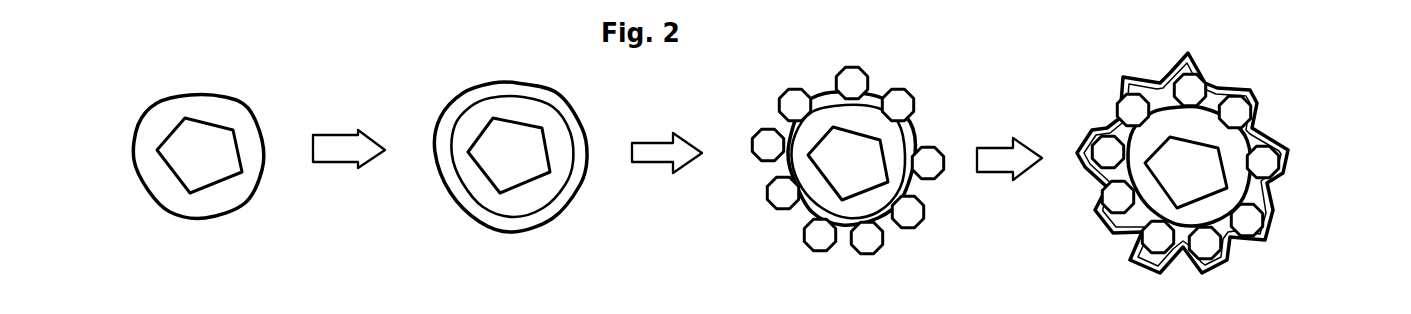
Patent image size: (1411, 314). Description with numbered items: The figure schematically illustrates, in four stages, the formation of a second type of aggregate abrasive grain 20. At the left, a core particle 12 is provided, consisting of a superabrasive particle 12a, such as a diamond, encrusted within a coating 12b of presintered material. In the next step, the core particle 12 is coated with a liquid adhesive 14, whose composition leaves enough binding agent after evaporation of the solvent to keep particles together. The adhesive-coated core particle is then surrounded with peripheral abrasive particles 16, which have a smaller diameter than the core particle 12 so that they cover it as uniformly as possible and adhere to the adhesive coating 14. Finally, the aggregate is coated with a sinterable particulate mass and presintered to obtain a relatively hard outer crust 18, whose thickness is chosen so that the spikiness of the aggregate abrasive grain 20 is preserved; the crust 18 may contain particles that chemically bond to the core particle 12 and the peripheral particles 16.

The core particle 12 is at (233, 149).
The superabrasive particle 12a is at (205, 192).
The coating of presintered material 12b is at (263, 180).
The liquid adhesive 14 is at (552, 88).
The peripheral abrasive particles 16 is at (939, 150).
The hard crust 18 is at (1220, 85).
The aggregate abrasive grain 20 is at (1223, 146).